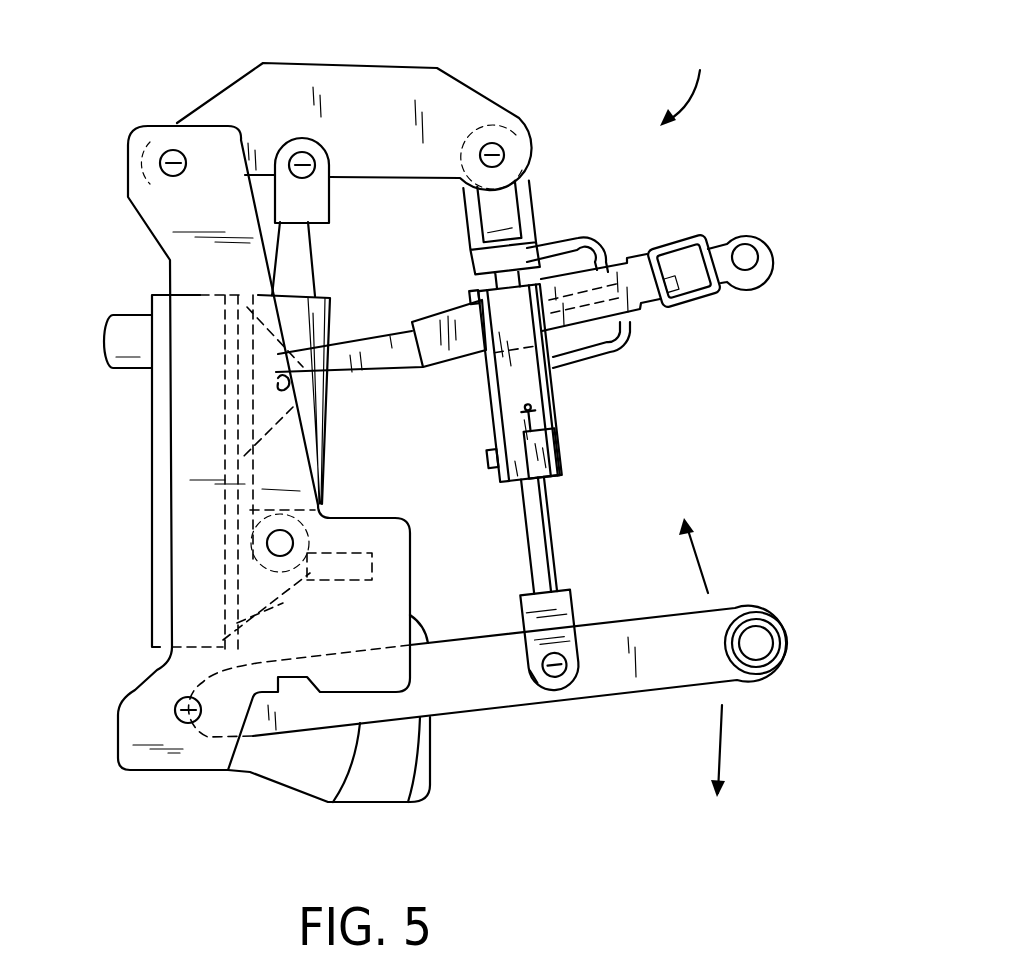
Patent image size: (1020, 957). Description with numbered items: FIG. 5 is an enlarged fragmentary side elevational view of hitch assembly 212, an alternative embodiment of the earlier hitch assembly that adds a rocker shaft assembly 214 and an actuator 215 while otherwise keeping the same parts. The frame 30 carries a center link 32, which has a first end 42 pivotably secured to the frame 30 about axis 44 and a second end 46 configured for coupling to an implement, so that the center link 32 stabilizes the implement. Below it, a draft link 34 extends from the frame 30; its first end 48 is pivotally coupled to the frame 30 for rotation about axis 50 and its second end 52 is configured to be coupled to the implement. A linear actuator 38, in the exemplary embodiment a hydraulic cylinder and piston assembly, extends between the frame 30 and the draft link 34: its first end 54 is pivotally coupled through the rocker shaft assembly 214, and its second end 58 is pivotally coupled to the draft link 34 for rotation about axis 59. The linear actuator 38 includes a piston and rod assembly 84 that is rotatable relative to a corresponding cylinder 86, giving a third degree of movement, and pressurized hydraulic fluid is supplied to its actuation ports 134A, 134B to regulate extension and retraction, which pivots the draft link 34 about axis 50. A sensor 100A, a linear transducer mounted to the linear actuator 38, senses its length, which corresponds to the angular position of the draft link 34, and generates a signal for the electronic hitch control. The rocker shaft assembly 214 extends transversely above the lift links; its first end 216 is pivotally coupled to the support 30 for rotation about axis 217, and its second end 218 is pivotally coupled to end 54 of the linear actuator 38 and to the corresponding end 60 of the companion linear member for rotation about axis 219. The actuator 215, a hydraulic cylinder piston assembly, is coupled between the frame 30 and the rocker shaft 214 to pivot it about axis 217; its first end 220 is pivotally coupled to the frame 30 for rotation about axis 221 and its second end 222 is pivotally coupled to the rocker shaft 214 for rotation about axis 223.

The hitch assembly 212 is at (690, 79).
The rocker shaft assembly 214 is at (367, 64).
The actuator 215 is at (335, 317).
The first end 216 is at (160, 137).
The axis 217 is at (173, 163).
The second end 218 is at (511, 118).
The axis 219 is at (492, 155).
The first end 220 is at (247, 543).
The axis 221 is at (280, 543).
The second end 222 is at (293, 137).
The axis 223 is at (302, 165).
The frame 30 is at (178, 445).
The center link 32 is at (618, 256).
The draft link 34 is at (722, 605).
The linear actuator 38 is at (565, 443).
The first end 42 is at (305, 385).
The axis 44 is at (278, 380).
The second end 46 is at (760, 246).
The first end 48 is at (198, 743).
The axis 50 is at (188, 710).
The second end 52 is at (797, 641).
The first end 54 is at (560, 190).
The second end 58 is at (577, 682).
The axis 59 is at (557, 675).
The end 60 is at (535, 694).
The piston and rod assembly 84 is at (550, 535).
The cylinder 86 is at (564, 477).
The sensor 100A is at (535, 430).
The actuation port 134A is at (488, 470).
The actuation port 134B is at (473, 297).